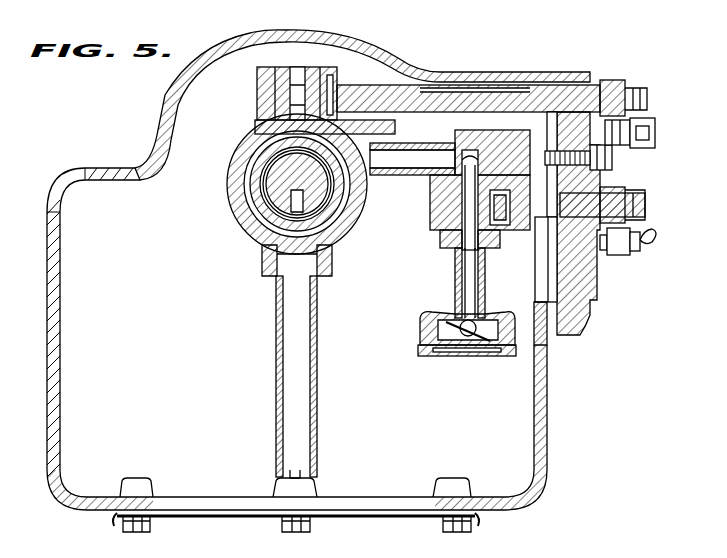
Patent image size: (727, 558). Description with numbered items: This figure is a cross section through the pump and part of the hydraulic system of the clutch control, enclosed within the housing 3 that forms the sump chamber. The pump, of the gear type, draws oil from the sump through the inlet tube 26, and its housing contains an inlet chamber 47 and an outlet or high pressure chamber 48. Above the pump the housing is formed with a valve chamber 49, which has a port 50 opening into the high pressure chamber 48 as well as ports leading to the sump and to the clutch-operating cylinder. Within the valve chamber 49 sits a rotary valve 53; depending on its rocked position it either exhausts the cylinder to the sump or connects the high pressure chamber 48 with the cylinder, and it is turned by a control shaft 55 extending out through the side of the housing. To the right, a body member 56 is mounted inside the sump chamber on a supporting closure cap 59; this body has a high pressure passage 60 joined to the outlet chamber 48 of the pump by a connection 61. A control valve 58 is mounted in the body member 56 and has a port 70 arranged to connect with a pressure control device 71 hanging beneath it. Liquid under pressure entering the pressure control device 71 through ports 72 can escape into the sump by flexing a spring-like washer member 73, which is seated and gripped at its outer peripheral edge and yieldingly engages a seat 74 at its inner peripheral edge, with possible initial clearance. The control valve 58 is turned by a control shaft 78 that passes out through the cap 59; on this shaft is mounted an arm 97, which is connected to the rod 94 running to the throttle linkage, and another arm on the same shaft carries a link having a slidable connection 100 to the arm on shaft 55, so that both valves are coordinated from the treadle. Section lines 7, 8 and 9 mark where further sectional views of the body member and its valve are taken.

The housing 3 is at (63, 172).
The valve chamber 49 is at (325, 72).
The rotary valve 53 is at (257, 94).
The control shaft 55 is at (462, 88).
The port 50 is at (252, 143).
The inlet chamber 47 is at (262, 240).
The outlet chamber 48 is at (340, 225).
The inlet tube 26 is at (317, 376).
The high pressure passage 60 is at (446, 141).
The connection 61 is at (416, 176).
The port 70 is at (438, 202).
The control valve 58 is at (432, 226).
The body member 56 is at (440, 246).
The pressure control device 71 is at (430, 316).
The ports 72 is at (495, 320).
The spring-like washer member 73 is at (493, 356).
The seat 74 is at (458, 356).
The supporting closure cap 59 is at (582, 330).
The slidable connection 100 is at (656, 136).
The control shaft 78 is at (648, 205).
The link 94 is at (652, 246).
The arm 97 is at (622, 256).
The section line 7 is at (478, 142).
The section line 8 is at (494, 155).
The section line 9 is at (522, 150).